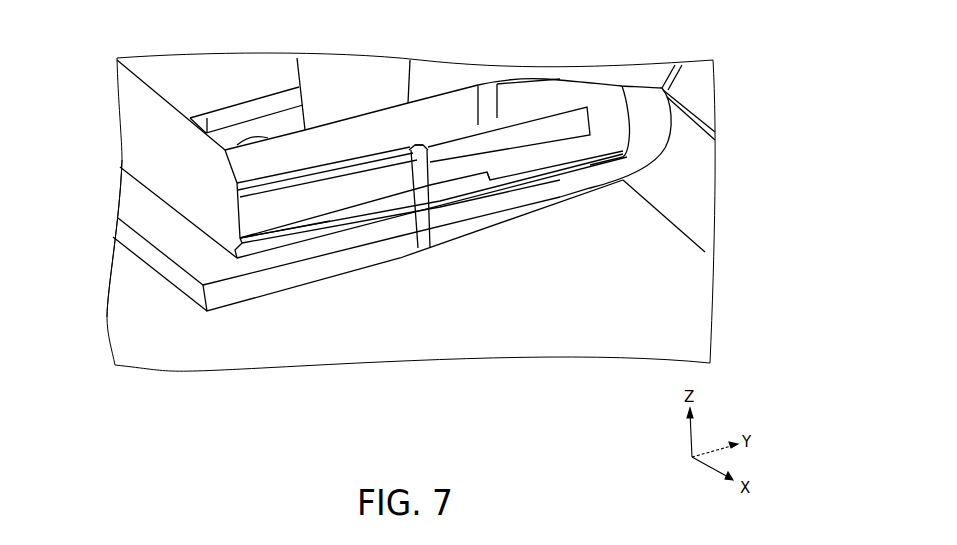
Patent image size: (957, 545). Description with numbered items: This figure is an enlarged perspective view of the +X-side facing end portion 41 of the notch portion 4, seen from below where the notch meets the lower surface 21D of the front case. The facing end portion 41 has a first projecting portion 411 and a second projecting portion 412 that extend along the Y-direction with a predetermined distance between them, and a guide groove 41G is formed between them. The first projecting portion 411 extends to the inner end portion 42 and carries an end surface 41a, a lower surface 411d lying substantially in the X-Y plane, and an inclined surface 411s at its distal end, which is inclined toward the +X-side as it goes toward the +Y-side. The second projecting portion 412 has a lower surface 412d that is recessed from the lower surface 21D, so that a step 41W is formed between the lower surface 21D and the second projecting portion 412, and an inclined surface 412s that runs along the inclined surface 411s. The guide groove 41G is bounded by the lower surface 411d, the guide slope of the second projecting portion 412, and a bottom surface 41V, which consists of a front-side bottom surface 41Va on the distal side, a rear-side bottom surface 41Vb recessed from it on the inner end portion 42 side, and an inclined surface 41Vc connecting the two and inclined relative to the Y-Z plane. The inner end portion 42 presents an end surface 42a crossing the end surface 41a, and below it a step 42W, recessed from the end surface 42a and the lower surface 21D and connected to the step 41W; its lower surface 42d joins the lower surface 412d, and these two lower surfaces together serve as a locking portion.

The notch portion 4 is at (221, 80).
The inner end portion 42 is at (147, 126).
The end surface 42a is at (127, 143).
The step 42W is at (177, 277).
The lower surface 42d is at (212, 267).
The facing end portion 41 is at (289, 130).
The end surface 41a is at (348, 128).
The first projecting portion 411 is at (438, 118).
The lower surface 411d is at (495, 126).
The inclined surface 411s is at (558, 97).
The second projecting portion 412 is at (343, 225).
The inclined surface 412s is at (564, 163).
The lower surface 412d is at (496, 190).
The guide groove 41G is at (552, 128).
The bottom surface 41V is at (538, 277).
The front-side bottom surface 41Va is at (418, 200).
The rear-side bottom surface 41Vb is at (447, 172).
The inclined surface 41Vc is at (433, 172).
The step 41W is at (308, 272).
The lower surface 21D is at (278, 348).